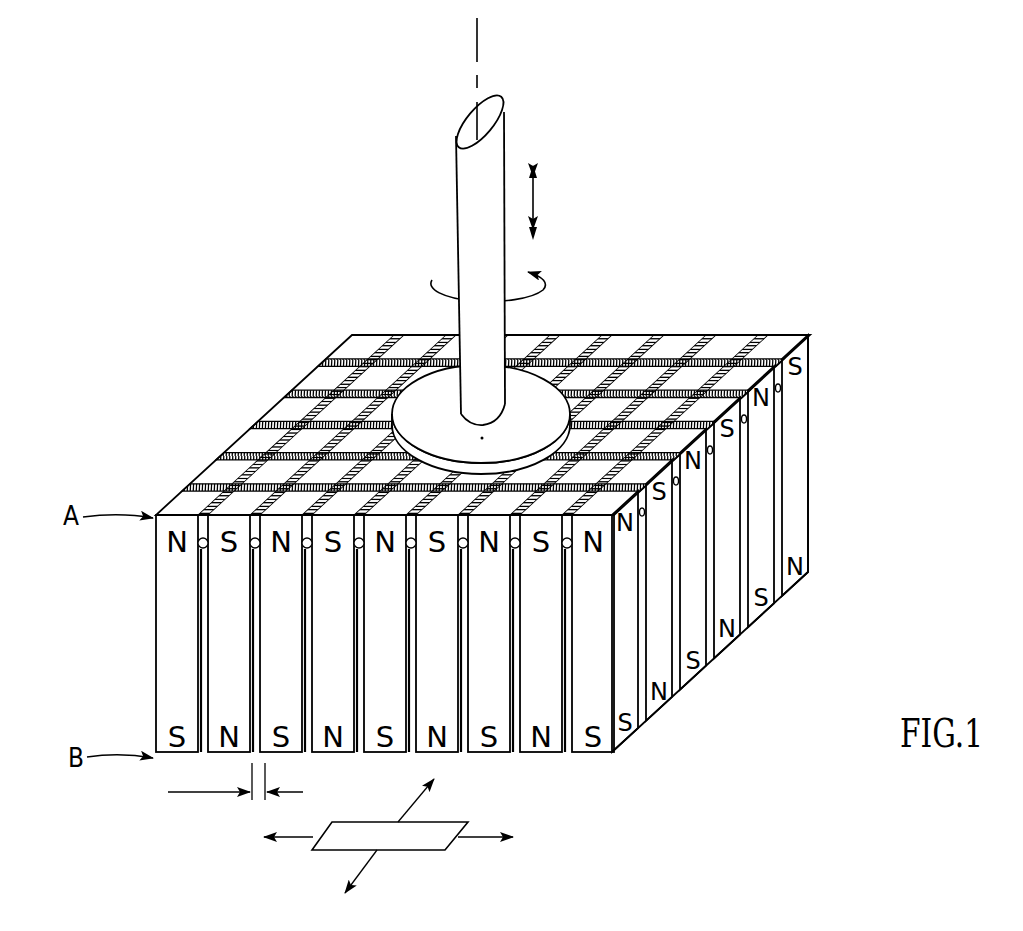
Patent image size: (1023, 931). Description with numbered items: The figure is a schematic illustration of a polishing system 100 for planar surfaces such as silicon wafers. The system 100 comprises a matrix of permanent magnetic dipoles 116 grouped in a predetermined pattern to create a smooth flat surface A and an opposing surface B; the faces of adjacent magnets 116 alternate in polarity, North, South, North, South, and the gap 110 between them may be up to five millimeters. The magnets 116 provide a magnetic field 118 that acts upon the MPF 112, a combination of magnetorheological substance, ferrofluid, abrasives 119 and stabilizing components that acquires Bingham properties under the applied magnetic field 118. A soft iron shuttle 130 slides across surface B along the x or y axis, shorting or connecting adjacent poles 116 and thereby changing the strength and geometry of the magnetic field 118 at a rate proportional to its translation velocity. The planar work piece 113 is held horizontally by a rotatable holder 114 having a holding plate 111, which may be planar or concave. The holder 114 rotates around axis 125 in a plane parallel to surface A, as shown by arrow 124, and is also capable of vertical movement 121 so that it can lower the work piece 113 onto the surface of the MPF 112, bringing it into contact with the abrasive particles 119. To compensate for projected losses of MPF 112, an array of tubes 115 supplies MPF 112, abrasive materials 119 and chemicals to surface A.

The polishing system 100 is at (802, 160).
The gap 110 is at (235, 781).
The holding plate 111 is at (532, 383).
The MPF (magnetic polishing fluid) 112 is at (228, 455).
The work piece 113 is at (638, 383).
The rotatable holder (chuck) 114 is at (442, 207).
The array of tubes 115 is at (200, 548).
The permanent magnetic dipoles 116 is at (172, 637).
The magnetic field 118 is at (277, 422).
The abrasives 119 is at (307, 391).
The vertical movement 121 is at (557, 202).
The arrow 124 is at (513, 285).
The axis 125 is at (505, 79).
The soft iron shuttle 130 is at (400, 852).